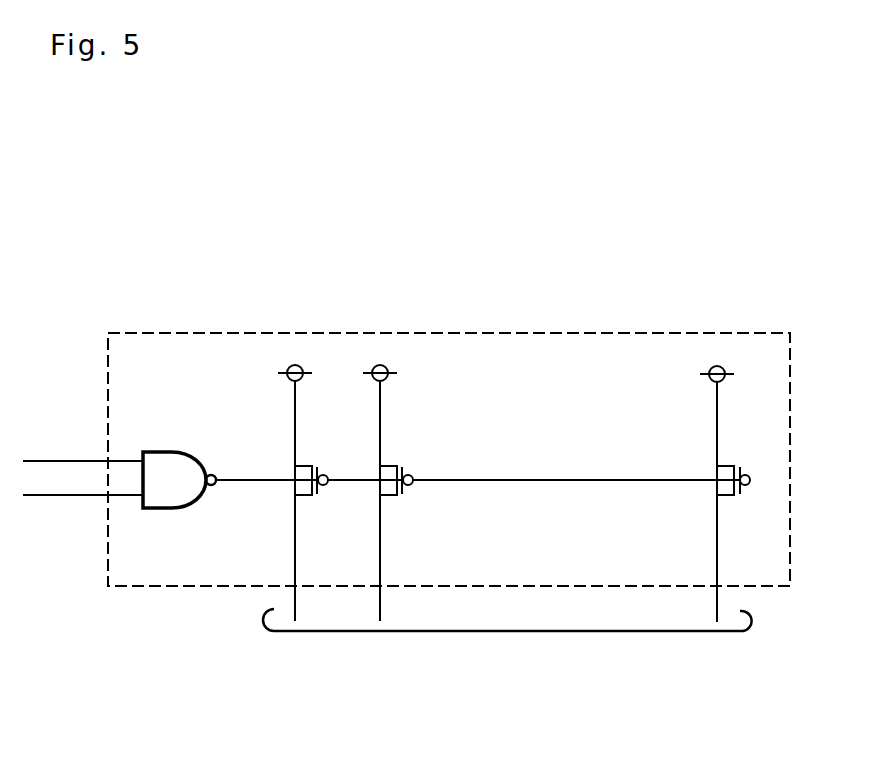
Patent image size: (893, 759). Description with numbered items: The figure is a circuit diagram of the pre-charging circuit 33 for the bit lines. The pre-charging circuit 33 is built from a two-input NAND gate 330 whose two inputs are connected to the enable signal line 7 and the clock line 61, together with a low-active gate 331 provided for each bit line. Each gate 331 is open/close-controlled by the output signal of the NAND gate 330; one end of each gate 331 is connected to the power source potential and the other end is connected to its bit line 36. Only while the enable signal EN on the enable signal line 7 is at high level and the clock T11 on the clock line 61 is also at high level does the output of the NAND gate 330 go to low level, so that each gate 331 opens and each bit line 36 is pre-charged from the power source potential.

The pre-charging circuit 33 is at (748, 333).
The two-input NAND gate 330 is at (168, 452).
The low-active gate 331 is at (305, 458).
The bit line 36 is at (761, 628).
The clock line 61 is at (58, 459).
The enable signal line 7 is at (55, 497).